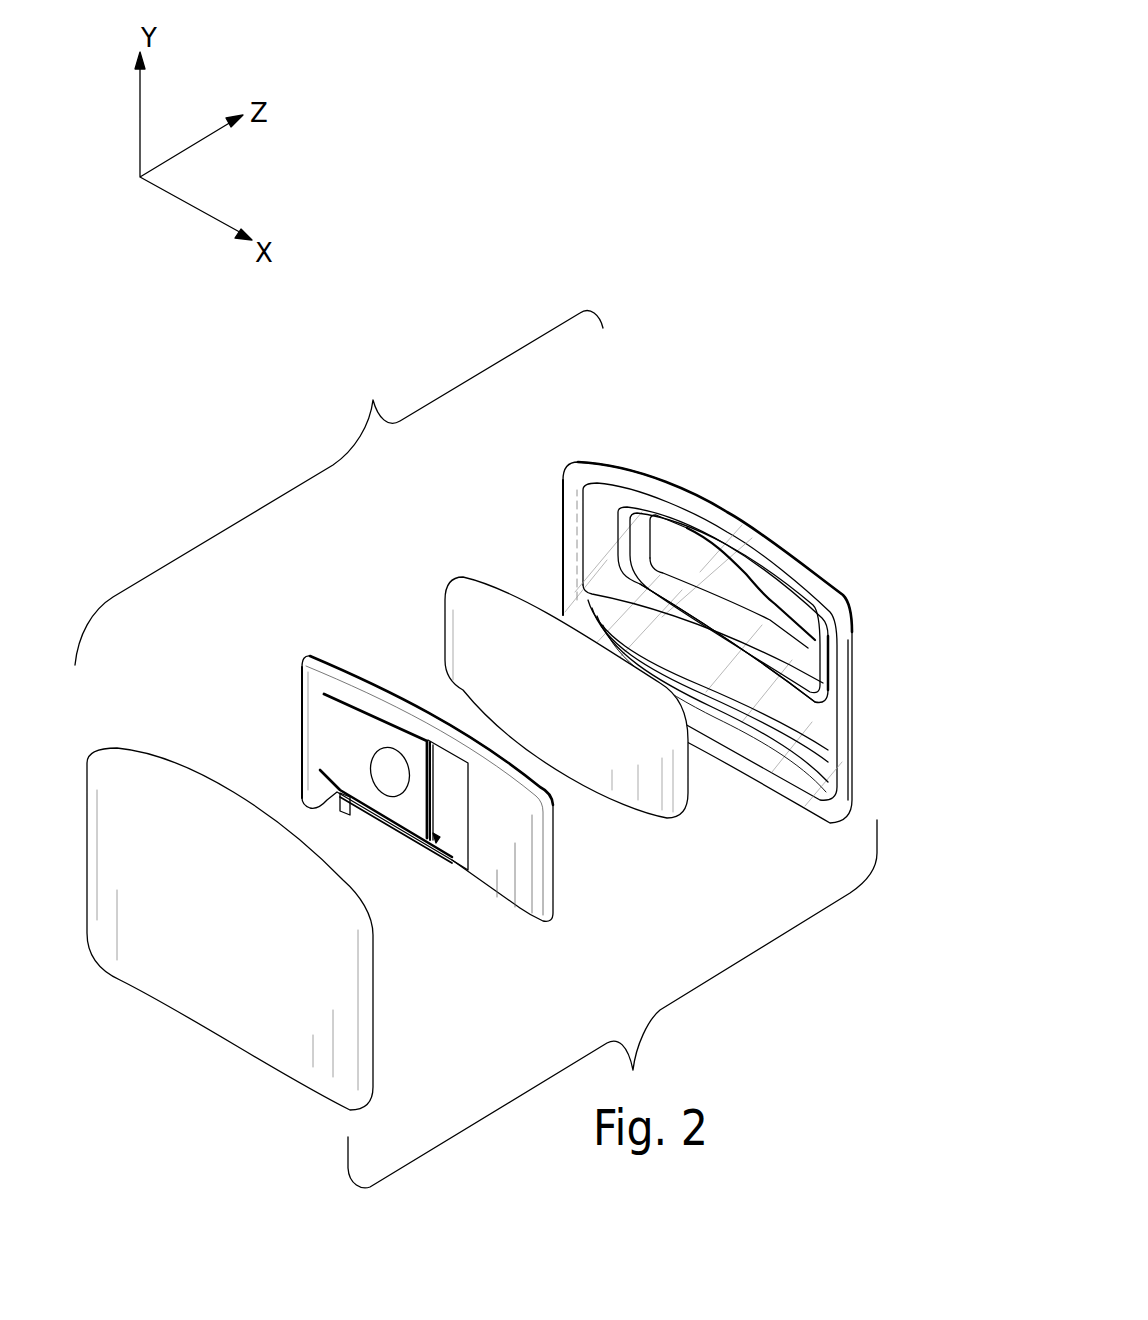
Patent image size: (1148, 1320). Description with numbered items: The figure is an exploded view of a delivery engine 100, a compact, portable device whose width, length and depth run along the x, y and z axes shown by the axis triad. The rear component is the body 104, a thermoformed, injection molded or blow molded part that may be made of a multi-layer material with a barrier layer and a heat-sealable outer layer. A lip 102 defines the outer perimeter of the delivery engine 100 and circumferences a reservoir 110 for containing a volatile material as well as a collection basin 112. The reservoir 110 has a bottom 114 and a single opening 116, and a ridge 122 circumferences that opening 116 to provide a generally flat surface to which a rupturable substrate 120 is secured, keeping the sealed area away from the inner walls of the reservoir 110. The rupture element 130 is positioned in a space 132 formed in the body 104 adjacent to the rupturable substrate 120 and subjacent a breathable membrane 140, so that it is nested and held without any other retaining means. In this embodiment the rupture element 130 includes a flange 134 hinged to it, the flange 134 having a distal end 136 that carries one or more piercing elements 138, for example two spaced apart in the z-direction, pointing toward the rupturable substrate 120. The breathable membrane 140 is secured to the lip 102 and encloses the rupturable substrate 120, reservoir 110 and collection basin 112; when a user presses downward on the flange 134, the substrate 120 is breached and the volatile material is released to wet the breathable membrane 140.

The delivery engine 100 is at (476, 749).
The lip 102 is at (578, 470).
The body 104 is at (710, 564).
The reservoir 110 is at (773, 613).
The collection basin 112 is at (807, 768).
The bottom 114 is at (760, 593).
The single opening 116 is at (780, 670).
The rupturable substrate 120 is at (482, 618).
The ridge 122 is at (765, 697).
The rupture element 130 is at (315, 705).
The space 132 is at (780, 708).
The flange 134 is at (342, 737).
The distal end 136 is at (422, 807).
The piercing elements 138 is at (433, 742).
The breathable membrane 140 is at (118, 797).